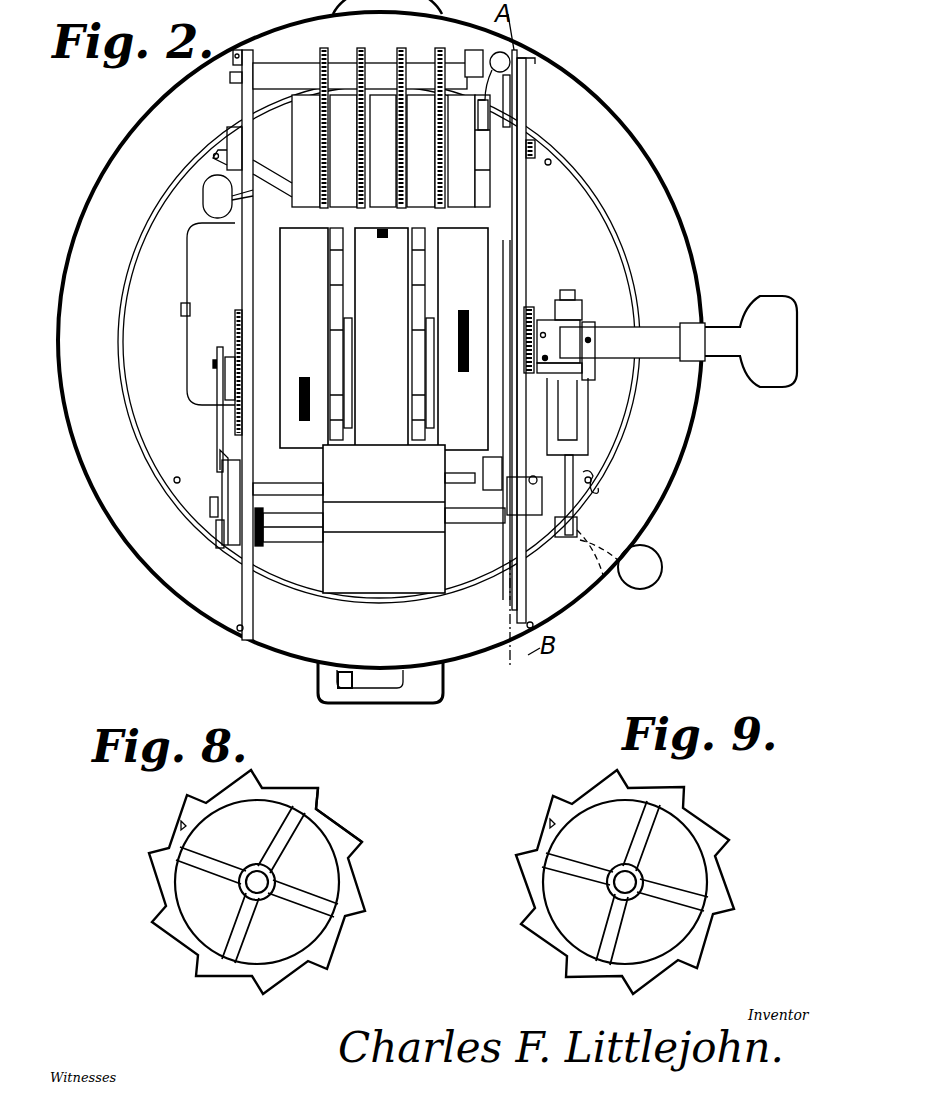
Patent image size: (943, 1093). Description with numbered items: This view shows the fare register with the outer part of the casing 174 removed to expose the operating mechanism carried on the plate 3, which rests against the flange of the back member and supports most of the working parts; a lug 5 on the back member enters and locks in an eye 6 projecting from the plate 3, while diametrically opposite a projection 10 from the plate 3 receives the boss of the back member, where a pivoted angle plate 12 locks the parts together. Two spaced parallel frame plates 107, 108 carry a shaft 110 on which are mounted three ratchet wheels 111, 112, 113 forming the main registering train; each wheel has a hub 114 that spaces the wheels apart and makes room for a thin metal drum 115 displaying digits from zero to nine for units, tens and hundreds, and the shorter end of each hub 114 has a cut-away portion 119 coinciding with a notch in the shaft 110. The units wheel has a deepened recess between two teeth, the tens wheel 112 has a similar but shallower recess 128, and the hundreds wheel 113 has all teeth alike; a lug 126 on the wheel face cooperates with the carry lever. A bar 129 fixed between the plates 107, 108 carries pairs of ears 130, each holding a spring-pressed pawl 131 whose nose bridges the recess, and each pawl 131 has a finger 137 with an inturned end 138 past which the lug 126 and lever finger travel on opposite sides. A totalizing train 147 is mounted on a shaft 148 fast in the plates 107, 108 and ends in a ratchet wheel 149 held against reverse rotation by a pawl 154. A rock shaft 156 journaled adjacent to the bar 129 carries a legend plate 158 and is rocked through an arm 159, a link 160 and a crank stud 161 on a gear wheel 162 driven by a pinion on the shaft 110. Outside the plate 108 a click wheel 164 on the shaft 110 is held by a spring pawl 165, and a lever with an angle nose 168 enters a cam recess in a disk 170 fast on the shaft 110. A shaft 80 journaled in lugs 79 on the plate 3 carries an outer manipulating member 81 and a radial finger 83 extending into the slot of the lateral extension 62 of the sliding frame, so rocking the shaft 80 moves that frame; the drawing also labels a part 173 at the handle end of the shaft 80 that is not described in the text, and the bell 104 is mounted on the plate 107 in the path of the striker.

In FIG. 2, the plate 3 is at (513, 623).
In FIG. 2, the lug 5 is at (362, 12).
In FIG. 2, the eye 6 is at (430, 8).
In FIG. 2, the projection 10 is at (443, 690).
In FIG. 2, the angle plate 12 is at (348, 684).
In FIG. 2, the lateral extension 62 is at (698, 392).
In FIG. 2, the lugs 79 is at (624, 262).
In FIG. 2, the shaft 80 is at (573, 460).
In FIG. 2, the manipulating member 81 is at (662, 568).
In FIG. 2, the radial finger 83 is at (585, 306).
In FIG. 2, the bell 104 is at (190, 268).
In FIG. 2, the frame plate 107 is at (247, 233).
In FIG. 2, the frame plate 108 is at (522, 212).
In FIG. 2, the shaft 110 is at (690, 340).
In FIG. 2, the ratchet wheel 111 is at (495, 262).
In FIG. 2, the ratchet wheel 112 is at (470, 300).
In FIG. 8, the ratchet wheel 112 is at (337, 833).
In FIG. 2, the ratchet wheel 113 is at (327, 303).
In FIG. 9, the ratchet wheel 113 is at (535, 870).
In FIG. 2, the hub 114 is at (273, 347).
In FIG. 8, the hub 114 is at (277, 863).
In FIG. 9, the hub 114 is at (640, 878).
In FIG. 2, the drum 115 is at (290, 410).
In FIG. 8, the cut-away portion 119 is at (268, 895).
In FIG. 9, the cut-away portion 119 is at (630, 902).
In FIG. 8, the lug 126 is at (180, 826).
In FIG. 9, the lug 126 is at (550, 823).
In FIG. 8, the recess 128 is at (252, 982).
In FIG. 2, the bar 129 is at (283, 520).
In FIG. 2, the ears 130 is at (510, 520).
In FIG. 2, the pawl 131 is at (578, 522).
In FIG. 2, the finger 137 is at (600, 478).
In FIG. 2, the inturned end 138 is at (588, 420).
In FIG. 2, the totalizing train 147 is at (483, 78).
In FIG. 2, the shaft 148 is at (536, 150).
In FIG. 2, the ratchet wheel 149 is at (483, 150).
In FIG. 2, the pawl 154 is at (505, 58).
In FIG. 2, the shaft 156 is at (303, 533).
In FIG. 2, the plate 158 is at (397, 575).
In FIG. 2, the arm 159 is at (222, 543).
In FIG. 2, the link 160 is at (222, 500).
In FIG. 2, the crank stud 161 is at (217, 362).
In FIG. 2, the gear wheel 162 is at (183, 309).
In FIG. 2, the ratchet or click wheel 164 is at (600, 332).
In FIG. 2, the pawl 165 is at (540, 322).
In FIG. 2, the angle nose 168 is at (582, 374).
In FIG. 2, the disk 170 is at (598, 372).
In FIG. 2, the handle knob 173 is at (773, 388).
In FIG. 2, the casing 174 is at (665, 168).